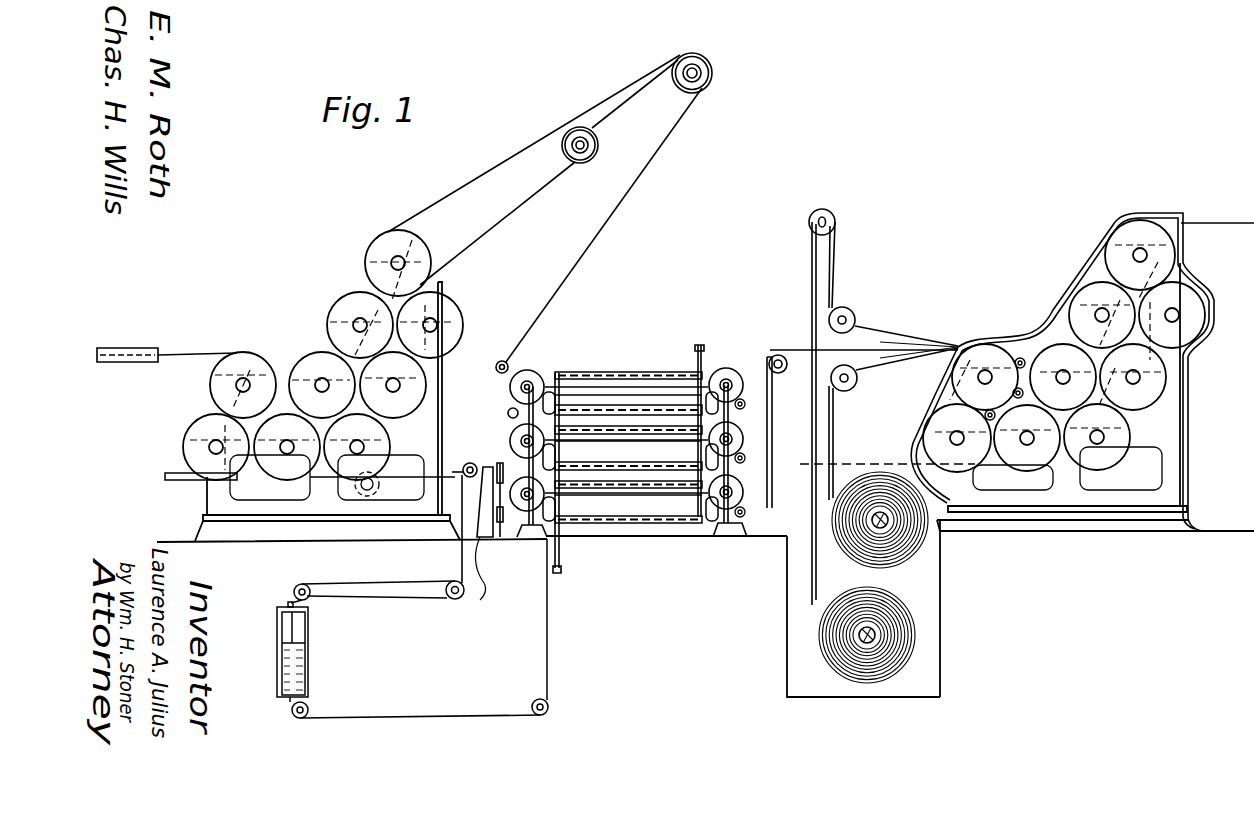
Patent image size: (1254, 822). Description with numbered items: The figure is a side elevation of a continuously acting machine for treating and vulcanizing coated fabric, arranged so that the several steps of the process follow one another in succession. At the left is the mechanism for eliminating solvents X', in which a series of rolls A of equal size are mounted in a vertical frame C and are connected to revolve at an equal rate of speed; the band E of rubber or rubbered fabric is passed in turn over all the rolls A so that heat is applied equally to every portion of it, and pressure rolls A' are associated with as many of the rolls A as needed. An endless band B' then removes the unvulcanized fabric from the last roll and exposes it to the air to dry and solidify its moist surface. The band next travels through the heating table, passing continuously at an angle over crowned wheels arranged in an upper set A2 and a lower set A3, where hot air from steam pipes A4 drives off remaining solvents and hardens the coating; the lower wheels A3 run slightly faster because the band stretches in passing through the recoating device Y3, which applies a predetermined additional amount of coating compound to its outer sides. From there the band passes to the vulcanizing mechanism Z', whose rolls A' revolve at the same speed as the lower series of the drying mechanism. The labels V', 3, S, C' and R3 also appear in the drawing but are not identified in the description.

The band E is at (178, 353).
The mechanism for eliminating solvents X' is at (314, 276).
The rolls A is at (674, 359).
The endless band B' is at (550, 213).
The upper set of crowned wheels A2 is at (520, 372).
The lower set of crowned wheels A3 is at (530, 462).
The roller bank frame V' is at (644, 448).
The steam pipes A4 is at (628, 372).
The guide pins 3 is at (754, 451).
The lever belt drive S is at (420, 627).
The vertical frame C is at (759, 480).
The recoating device Y3 is at (308, 658).
The pressure rolls A' is at (1012, 384).
The vulcanizing mechanism Z' is at (947, 315).
The casing C' is at (1082, 372).
The spools R3 is at (830, 451).